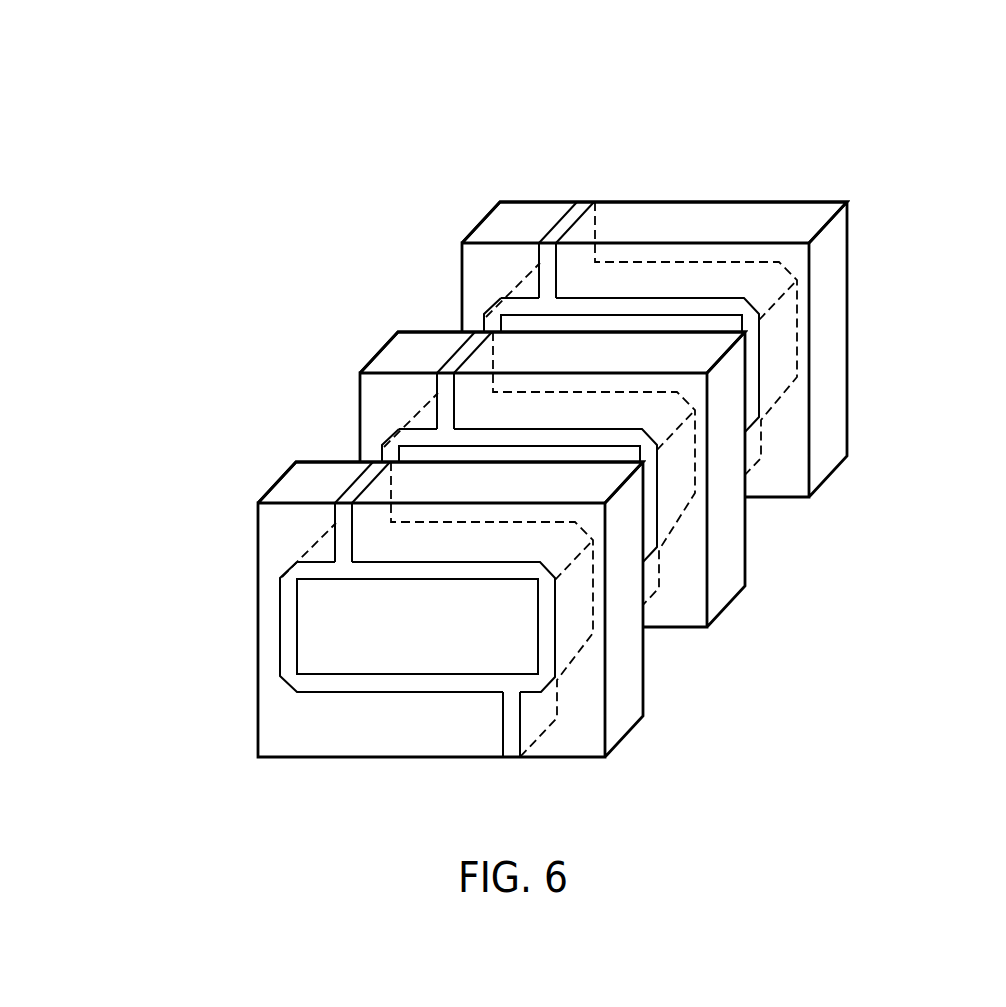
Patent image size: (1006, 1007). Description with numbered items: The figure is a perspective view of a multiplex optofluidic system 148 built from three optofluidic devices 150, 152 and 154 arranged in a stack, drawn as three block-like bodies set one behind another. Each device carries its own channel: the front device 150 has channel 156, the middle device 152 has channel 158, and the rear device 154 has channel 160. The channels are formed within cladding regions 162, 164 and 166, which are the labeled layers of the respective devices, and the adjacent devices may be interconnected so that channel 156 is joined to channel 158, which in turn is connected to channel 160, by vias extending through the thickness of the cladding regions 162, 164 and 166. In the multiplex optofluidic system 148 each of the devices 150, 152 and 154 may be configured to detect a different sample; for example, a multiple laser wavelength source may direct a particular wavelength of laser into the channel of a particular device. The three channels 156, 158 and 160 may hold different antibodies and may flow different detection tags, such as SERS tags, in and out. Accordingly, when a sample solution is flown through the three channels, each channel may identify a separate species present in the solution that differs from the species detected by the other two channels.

The multiplex optofluidic system 148 is at (874, 120).
The optofluidic device 150 is at (625, 687).
The optofluidic device 152 is at (725, 556).
The optofluidic device 154 is at (826, 423).
The channel 156 is at (290, 633).
The channel 158 is at (447, 403).
The channel 160 is at (578, 202).
The cladding region 162 is at (538, 498).
The cladding region 164 is at (603, 366).
The cladding region 166 is at (705, 234).